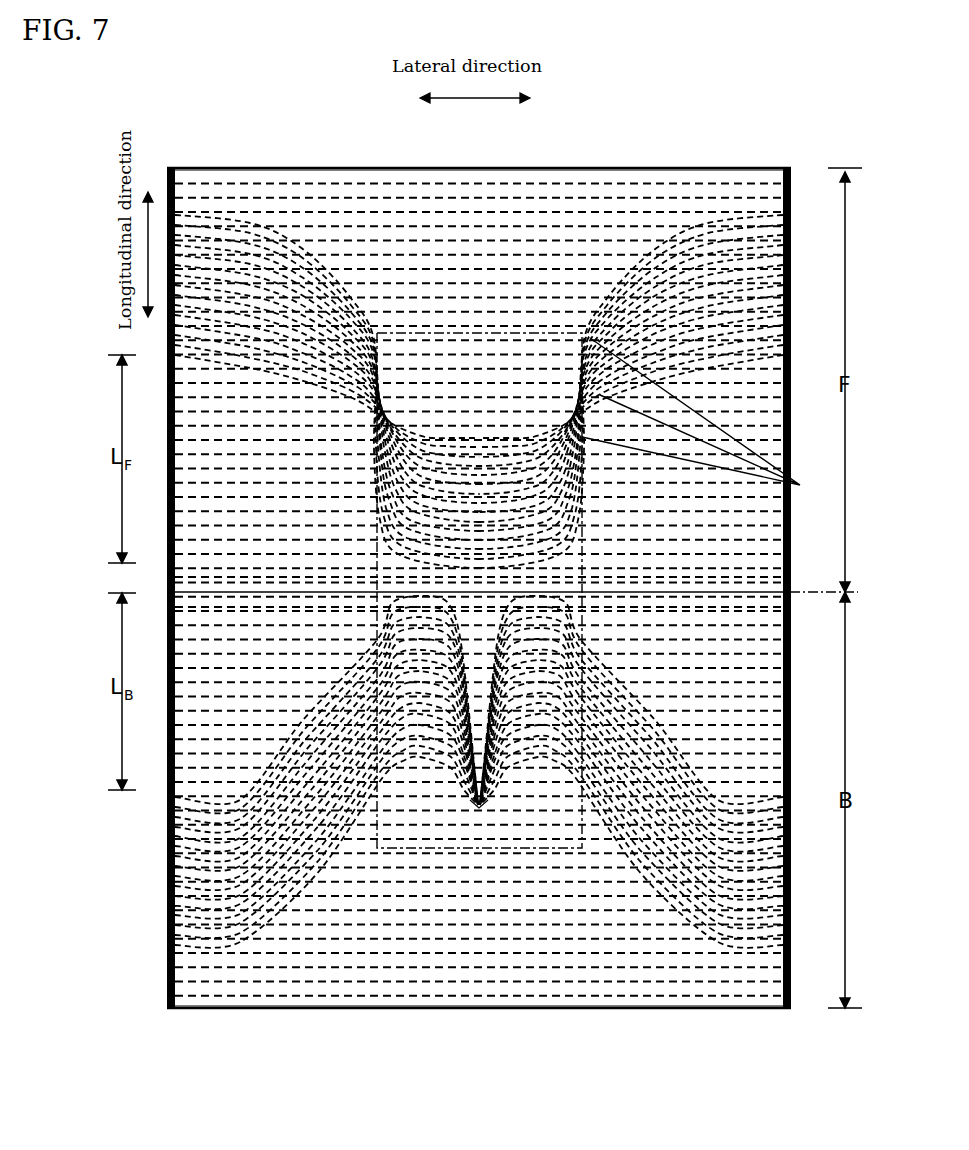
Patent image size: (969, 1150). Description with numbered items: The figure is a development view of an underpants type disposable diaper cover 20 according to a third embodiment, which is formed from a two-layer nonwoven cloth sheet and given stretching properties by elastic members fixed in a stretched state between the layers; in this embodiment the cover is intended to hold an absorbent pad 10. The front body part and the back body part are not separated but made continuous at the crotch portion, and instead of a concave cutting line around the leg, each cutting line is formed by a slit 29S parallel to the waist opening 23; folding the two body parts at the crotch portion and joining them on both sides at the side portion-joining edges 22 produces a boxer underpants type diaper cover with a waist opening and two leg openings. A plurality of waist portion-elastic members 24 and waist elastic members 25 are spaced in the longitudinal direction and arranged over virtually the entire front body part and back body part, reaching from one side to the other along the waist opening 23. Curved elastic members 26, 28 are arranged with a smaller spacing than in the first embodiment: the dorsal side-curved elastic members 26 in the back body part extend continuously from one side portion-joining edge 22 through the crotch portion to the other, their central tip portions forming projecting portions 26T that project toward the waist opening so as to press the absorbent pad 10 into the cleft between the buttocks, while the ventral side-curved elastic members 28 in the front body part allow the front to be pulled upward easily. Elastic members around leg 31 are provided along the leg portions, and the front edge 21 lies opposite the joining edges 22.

The absorbent pad 10 is at (418, 848).
The underpants type disposable diaper cover 20 is at (603, 168).
The front end edge 21 is at (168, 186).
The side portion-joining edge 22 is at (172, 990).
The waist opening 23 is at (378, 168).
The waist portion-elastic members 24 is at (452, 200).
The waist elastic members 25 is at (530, 262).
The dorsal side-curved elastic members 26 is at (318, 805).
The projecting portions 26T is at (484, 802).
The ventral side-curved elastic members 28 is at (705, 417).
The slit 29S is at (243, 592).
The elastic members around leg 31 is at (200, 587).